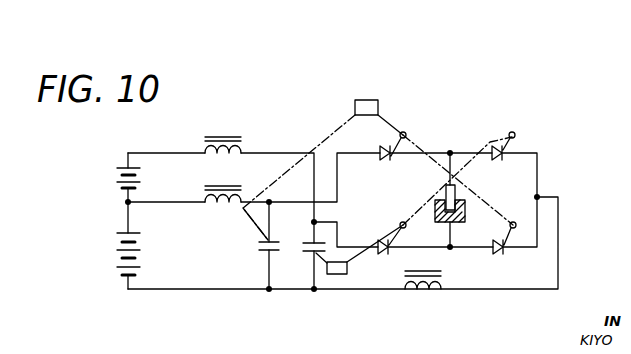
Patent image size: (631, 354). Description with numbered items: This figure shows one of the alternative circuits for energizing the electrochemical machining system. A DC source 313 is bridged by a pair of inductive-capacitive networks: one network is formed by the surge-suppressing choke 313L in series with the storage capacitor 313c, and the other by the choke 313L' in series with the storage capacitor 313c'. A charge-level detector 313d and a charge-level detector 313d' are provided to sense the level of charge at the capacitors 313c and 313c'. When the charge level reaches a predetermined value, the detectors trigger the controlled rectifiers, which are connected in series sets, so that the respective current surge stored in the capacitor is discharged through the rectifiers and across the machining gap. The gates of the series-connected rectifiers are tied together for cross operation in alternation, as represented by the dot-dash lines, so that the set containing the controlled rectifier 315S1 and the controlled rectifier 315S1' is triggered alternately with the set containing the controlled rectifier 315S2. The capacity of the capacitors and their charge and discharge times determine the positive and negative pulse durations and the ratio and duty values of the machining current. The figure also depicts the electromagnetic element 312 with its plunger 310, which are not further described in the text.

The DC source 313 is at (113, 256).
The surge-suppressing choke 313L is at (204, 159).
The surge-suppressing choke 313L' is at (206, 212).
The storage capacitor 313c' is at (239, 257).
The storage capacitor 313c is at (296, 284).
The charge-level detector 313d is at (355, 304).
The charge-level detector 313d' is at (397, 89).
The controlled rectifier 315S1 is at (375, 143).
The controlled rectifier 315S2 is at (507, 153).
The controlled rectifier 315S1' is at (512, 252).
The solenoid 312 is at (434, 204).
The plunger 310 is at (458, 196).